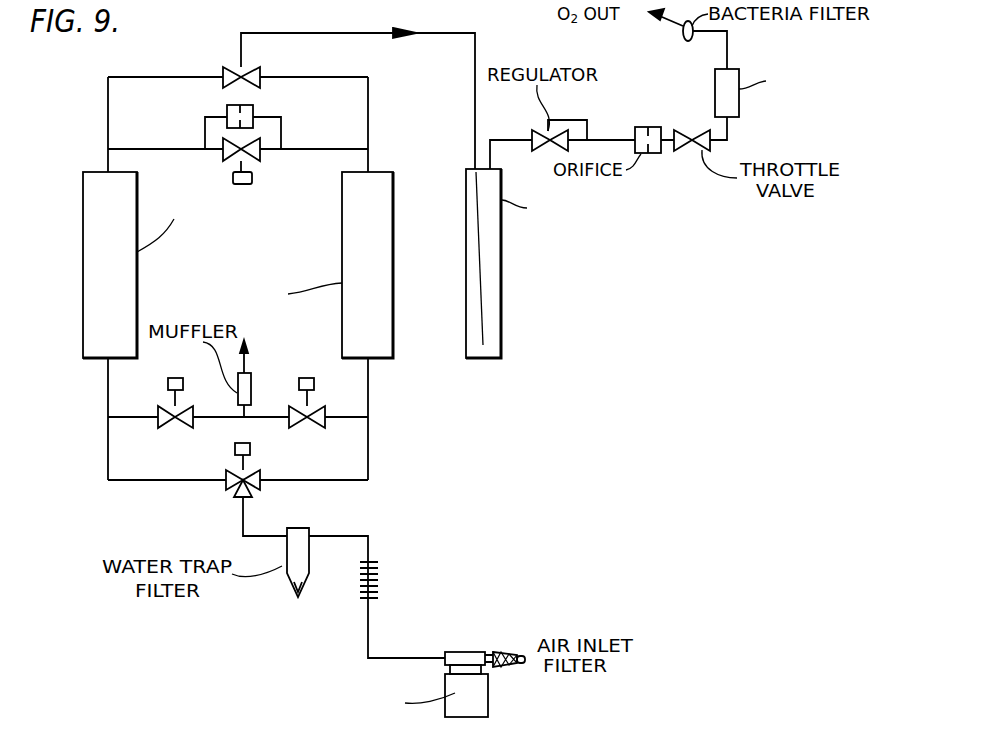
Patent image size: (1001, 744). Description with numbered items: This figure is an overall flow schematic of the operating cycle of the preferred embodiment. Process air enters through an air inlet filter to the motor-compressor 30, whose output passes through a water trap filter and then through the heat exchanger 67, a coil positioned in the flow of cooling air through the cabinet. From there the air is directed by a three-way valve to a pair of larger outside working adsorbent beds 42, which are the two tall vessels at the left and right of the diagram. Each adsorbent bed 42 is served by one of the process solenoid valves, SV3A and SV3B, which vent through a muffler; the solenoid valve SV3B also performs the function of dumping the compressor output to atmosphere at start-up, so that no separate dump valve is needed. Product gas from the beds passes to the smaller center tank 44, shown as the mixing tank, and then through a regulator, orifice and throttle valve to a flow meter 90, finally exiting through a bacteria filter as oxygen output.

The working adsorbent beds 42 is at (83, 237).
The center tank 44 is at (502, 243).
The flow meter 90 is at (715, 93).
The heat exchanger 67 is at (362, 582).
The motor-compressor 30 is at (483, 706).
The solenoid valve SV3A is at (170, 429).
The solenoid valve SV3B is at (302, 429).